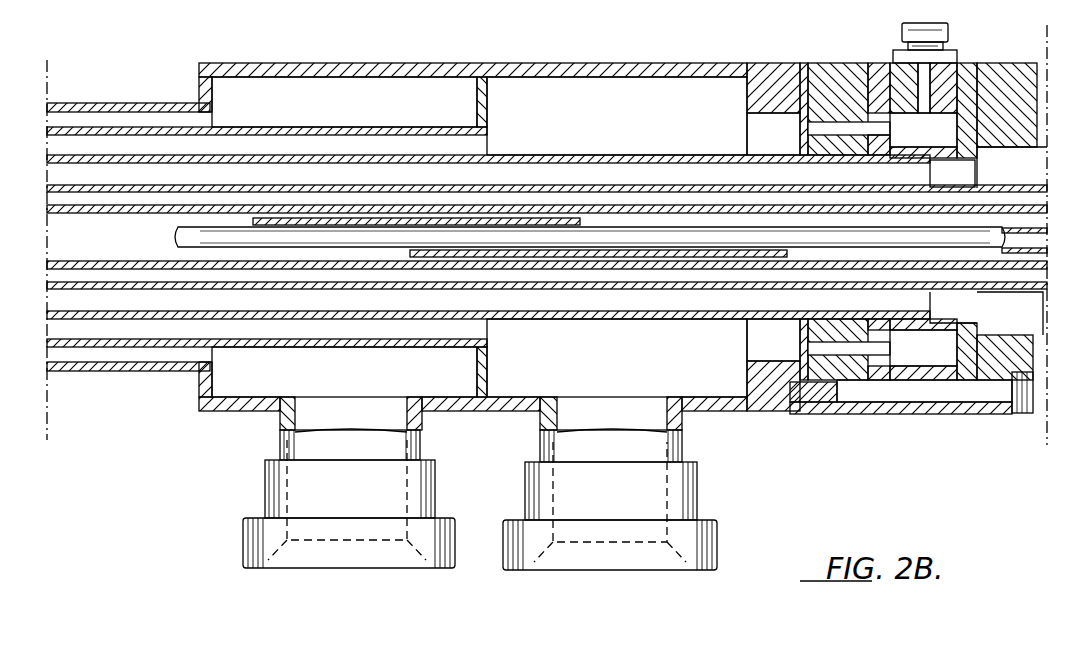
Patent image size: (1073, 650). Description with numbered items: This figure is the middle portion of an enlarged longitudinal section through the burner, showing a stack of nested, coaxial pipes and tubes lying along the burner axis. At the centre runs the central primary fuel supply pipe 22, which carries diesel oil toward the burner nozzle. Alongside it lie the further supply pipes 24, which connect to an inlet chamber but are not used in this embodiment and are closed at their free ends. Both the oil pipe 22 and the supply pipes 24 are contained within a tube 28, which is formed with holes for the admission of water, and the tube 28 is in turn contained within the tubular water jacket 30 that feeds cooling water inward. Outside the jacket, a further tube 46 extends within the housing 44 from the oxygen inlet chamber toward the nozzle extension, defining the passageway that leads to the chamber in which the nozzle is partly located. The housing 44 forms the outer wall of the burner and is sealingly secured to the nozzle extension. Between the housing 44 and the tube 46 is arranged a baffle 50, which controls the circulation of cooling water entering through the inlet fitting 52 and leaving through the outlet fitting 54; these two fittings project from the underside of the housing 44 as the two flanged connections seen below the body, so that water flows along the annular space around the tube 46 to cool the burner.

The central primary fuel supply pipe 22 is at (378, 238).
The further supply pipe 24 is at (681, 250).
The tube 28 is at (626, 210).
The tubular water jacket 30 is at (135, 185).
The housing 44 is at (100, 104).
The tube 46 is at (551, 157).
The baffle 50 is at (79, 128).
The inlet fitting 52 is at (265, 470).
The outlet fitting 54 is at (675, 495).